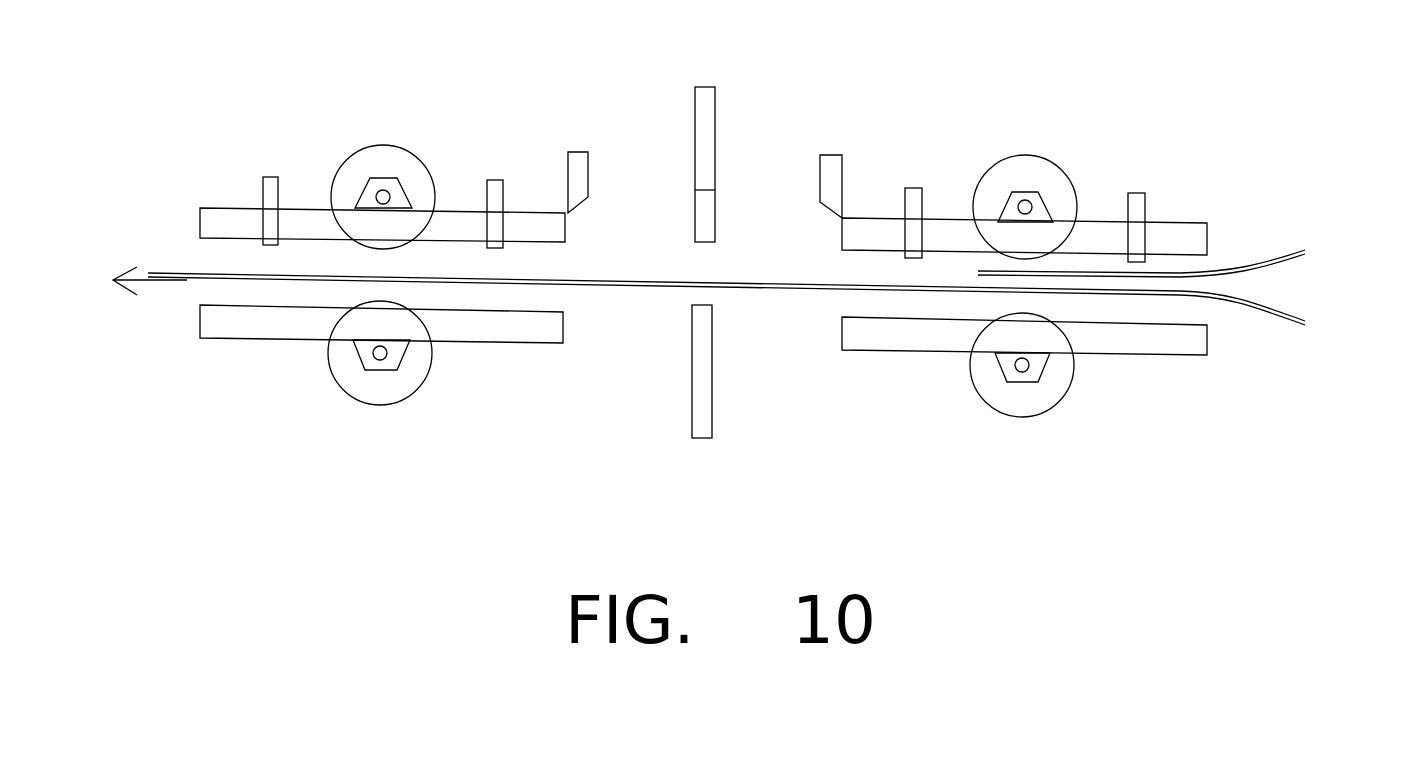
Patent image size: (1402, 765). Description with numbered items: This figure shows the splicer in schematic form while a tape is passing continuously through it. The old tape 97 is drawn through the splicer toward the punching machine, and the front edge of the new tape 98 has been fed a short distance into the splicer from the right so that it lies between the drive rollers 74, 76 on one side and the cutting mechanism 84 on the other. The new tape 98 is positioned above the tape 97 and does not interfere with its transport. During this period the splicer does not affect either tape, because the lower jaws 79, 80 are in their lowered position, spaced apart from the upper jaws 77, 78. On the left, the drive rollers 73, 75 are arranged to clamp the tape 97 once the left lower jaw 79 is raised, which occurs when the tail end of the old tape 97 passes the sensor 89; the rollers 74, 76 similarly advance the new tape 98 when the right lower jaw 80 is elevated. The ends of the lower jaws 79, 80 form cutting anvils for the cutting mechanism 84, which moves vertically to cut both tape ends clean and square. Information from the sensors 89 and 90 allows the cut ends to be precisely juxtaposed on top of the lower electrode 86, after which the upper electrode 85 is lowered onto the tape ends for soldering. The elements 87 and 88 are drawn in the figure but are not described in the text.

The left drive roller 73 is at (385, 145).
The right drive roller 74 is at (1055, 163).
The left drive roller 75 is at (405, 397).
The right drive roller 76 is at (1042, 413).
The upper jaw 77 is at (200, 208).
The upper jaw 78 is at (1207, 223).
The lower jaw 79 is at (200, 338).
The lower jaw 80 is at (1207, 355).
The cutting mechanism 84 is at (588, 152).
The upper electrode 85 is at (715, 87).
The lower electrode 86 is at (712, 438).
The bracket 87 is at (263, 177).
The bracket 88 is at (1145, 193).
The sensor 89 is at (487, 180).
The sensor 90 is at (922, 188).
The old tape 97 is at (1275, 312).
The new tape 98 is at (1292, 253).